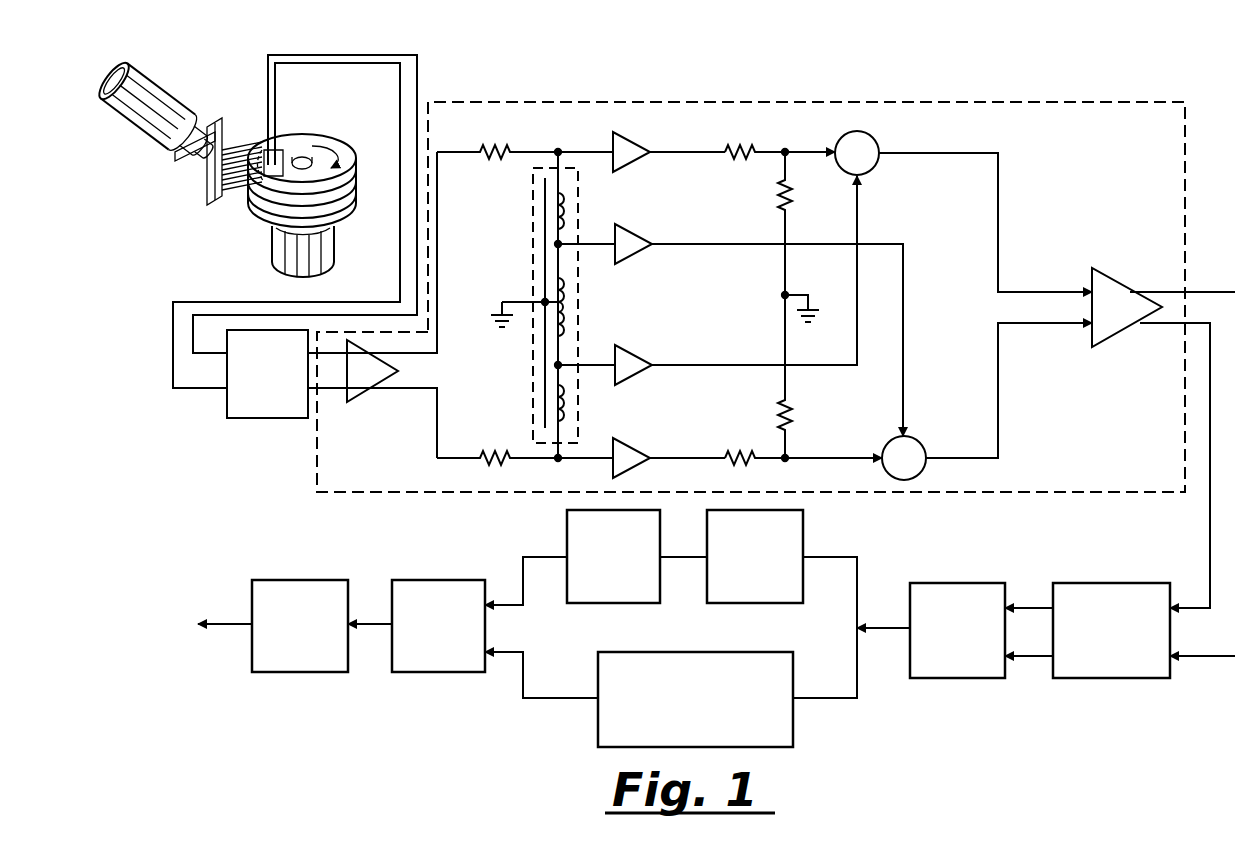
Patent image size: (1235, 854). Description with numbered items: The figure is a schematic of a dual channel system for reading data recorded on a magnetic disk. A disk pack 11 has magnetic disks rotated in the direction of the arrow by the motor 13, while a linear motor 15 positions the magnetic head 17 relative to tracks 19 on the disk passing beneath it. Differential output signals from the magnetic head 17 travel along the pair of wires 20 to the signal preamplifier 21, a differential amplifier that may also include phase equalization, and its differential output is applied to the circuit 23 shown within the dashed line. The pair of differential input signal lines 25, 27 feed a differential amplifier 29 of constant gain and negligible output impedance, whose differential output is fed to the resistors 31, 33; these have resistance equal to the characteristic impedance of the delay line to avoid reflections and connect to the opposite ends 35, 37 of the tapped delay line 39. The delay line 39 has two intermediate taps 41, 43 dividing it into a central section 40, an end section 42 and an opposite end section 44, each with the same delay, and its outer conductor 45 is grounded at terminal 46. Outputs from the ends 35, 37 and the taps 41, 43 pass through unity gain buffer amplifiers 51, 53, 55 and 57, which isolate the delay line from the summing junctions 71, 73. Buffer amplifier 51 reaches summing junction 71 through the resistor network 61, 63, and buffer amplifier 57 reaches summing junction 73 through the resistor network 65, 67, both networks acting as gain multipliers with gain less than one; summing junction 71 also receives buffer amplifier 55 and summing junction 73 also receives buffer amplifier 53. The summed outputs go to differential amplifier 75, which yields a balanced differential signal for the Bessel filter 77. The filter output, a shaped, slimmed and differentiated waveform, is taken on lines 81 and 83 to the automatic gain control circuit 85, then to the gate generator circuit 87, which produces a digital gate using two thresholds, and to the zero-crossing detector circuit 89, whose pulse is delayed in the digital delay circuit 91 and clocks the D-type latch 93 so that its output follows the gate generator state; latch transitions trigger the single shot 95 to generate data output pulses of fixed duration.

The disk pack 11 is at (333, 135).
The motor 13 is at (336, 240).
The linear motor 15 is at (160, 95).
The magnetic head 17 is at (276, 168).
The tracks 19 is at (270, 190).
The pair of wires 20 is at (262, 88).
The signal preamplifier 21 is at (298, 418).
The circuit 23 is at (317, 470).
The differential input signal line 25 is at (338, 388).
The differential input signal line 27 is at (355, 345).
The differential amplifier 29 is at (365, 392).
The resistor 31 is at (503, 162).
The resistor 33 is at (505, 452).
The first end of delay line 35 is at (558, 148).
The second end of delay line 37 is at (560, 463).
The tapped delay line 39 is at (556, 305).
The central section 40 is at (568, 307).
The intermediate tap 41 is at (567, 262).
The end section 42 is at (568, 218).
The intermediate tap 43 is at (562, 360).
The opposite end section 44 is at (568, 402).
The outer conductor 45 is at (540, 405).
The ground terminal 46 is at (500, 333).
The unity gain buffer amplifier 51 is at (622, 142).
The unity gain buffer amplifier 53 is at (626, 232).
The unity gain buffer amplifier 55 is at (636, 355).
The unity gain buffer amplifier 57 is at (632, 447).
The resistor 61 is at (732, 150).
The resistor 63 is at (782, 197).
The resistor 65 is at (748, 452).
The resistor 67 is at (790, 420).
The summing junction 71 is at (876, 140).
The summing junction 73 is at (922, 448).
The differential amplifier 75 is at (1108, 276).
The Bessel filter 77 is at (1097, 680).
The line 81 is at (1034, 604).
The line 83 is at (1040, 658).
The automatic gain control circuit 85 is at (960, 680).
The gate generator circuit 87 is at (795, 740).
The zero-crossing detector circuit 89 is at (806, 545).
The digital delay circuit 91 is at (567, 542).
The D-type latch 93 is at (435, 672).
The single shot 95 is at (293, 672).